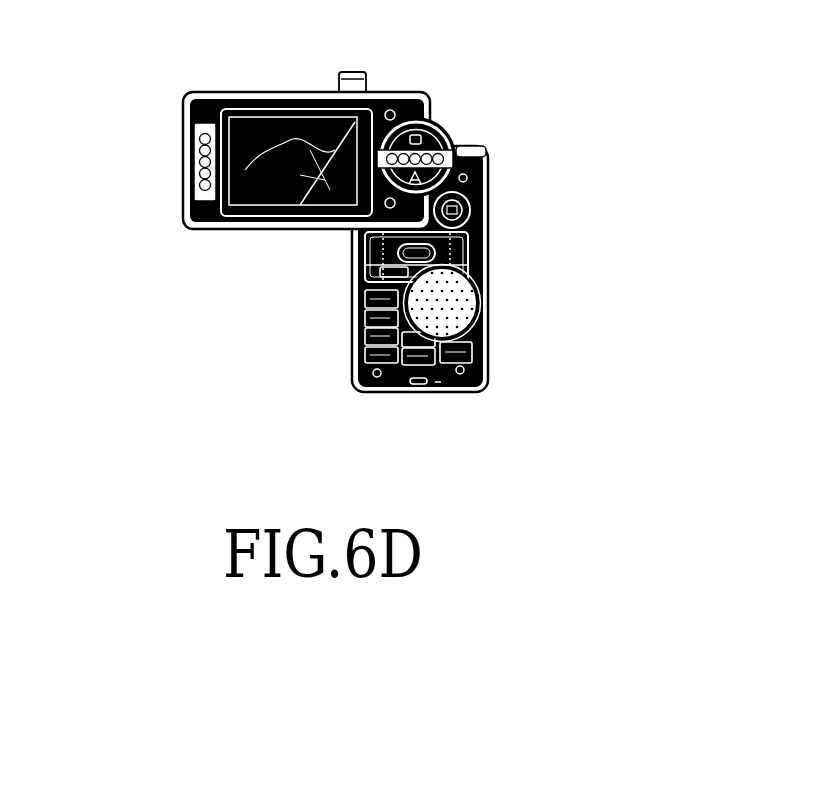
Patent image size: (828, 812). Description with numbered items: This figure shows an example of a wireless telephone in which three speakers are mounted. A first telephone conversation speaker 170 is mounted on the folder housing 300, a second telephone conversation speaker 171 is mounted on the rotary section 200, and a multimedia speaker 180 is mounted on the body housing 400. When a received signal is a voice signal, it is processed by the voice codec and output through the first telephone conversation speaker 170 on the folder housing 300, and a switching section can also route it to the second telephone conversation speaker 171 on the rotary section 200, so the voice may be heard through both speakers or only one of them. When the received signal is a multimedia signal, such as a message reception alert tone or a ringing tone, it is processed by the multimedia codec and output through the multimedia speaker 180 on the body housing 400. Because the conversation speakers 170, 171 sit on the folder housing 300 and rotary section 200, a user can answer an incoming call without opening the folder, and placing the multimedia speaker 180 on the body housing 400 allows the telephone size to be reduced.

The first telephone conversation speaker 170 is at (207, 124).
The second telephone conversation speaker 171 is at (484, 151).
The multimedia speaker 180 is at (478, 299).
The rotary section 200 is at (440, 132).
The folder housing 300 is at (188, 148).
The body housing 400 is at (352, 310).